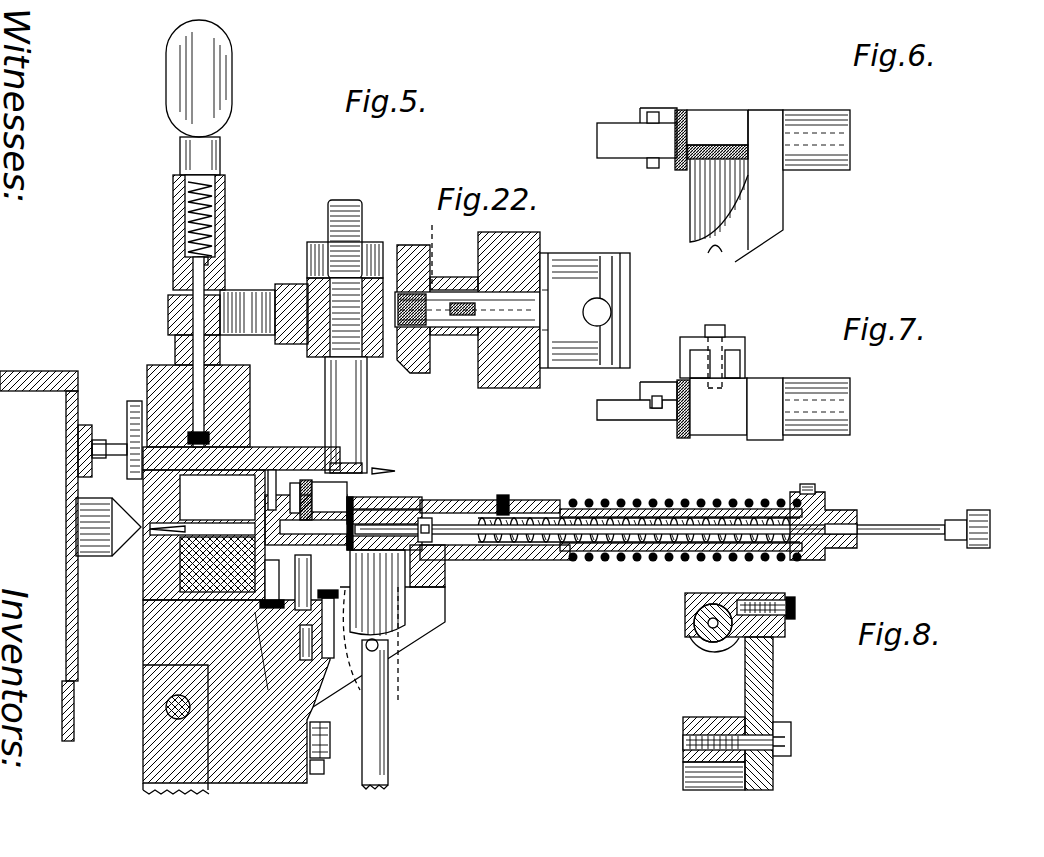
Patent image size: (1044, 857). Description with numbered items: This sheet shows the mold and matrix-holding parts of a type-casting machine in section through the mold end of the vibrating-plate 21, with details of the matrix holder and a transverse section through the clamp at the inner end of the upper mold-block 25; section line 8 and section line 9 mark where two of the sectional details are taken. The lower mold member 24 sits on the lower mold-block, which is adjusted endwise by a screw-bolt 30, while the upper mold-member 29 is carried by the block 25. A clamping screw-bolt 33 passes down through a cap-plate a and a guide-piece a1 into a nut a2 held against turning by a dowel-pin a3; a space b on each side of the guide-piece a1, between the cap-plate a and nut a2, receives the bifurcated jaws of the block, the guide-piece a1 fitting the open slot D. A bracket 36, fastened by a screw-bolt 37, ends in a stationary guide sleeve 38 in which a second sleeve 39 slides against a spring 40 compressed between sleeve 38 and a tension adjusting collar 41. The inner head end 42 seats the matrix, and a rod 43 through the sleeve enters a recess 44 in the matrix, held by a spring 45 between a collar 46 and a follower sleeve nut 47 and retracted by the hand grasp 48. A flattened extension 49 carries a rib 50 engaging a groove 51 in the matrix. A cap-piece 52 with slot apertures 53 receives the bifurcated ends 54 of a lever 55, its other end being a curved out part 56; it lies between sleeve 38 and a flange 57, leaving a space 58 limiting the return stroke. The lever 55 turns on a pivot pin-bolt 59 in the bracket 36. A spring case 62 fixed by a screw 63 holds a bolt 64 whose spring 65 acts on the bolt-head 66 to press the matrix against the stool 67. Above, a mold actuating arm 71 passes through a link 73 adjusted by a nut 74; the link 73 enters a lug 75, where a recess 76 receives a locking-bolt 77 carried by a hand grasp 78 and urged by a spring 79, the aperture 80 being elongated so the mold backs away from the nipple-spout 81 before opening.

In FIG. 5, the section line 8 is at (412, 474).
In FIG. 6, the section line 8 is at (713, 150).
In FIG. 5, the section line 9 is at (127, 668).
In FIG. 5, the vibrating-plate 21 is at (145, 762).
In FIG. 5, the lower mold member 24 is at (217, 564).
In FIG. 5, the upper mold-block 25 is at (252, 385).
In FIG. 5, the upper mold-member 29 is at (204, 535).
In FIG. 5, the screw-bolt 30 is at (178, 722).
In FIG. 5, the clamping screw-bolt 33 is at (236, 691).
In FIG. 22, the clamping screw-bolt 33 is at (627, 310).
In FIG. 5, the bracket 36 is at (435, 600).
In FIG. 6, the bracket 36 is at (770, 210).
In FIG. 8, the bracket 36 is at (773, 680).
In FIG. 5, the screw-bolt 37 is at (330, 727).
In FIG. 5, the stationary guide sleeve 38 is at (545, 500).
In FIG. 6, the stationary guide sleeve 38 is at (812, 120).
In FIG. 7, the stationary guide sleeve 38 is at (825, 390).
In FIG. 5, the second sleeve 39 is at (625, 555).
In FIG. 6, the second sleeve 39 is at (712, 150).
In FIG. 5, the spring 40 is at (680, 505).
In FIG. 5, the tension adjusting collar 41 is at (812, 505).
In FIG. 5, the inner head end 42 is at (377, 593).
In FIG. 8, the inner head end 42 is at (695, 630).
In FIG. 5, the rod 43 is at (428, 516).
In FIG. 8, the rod 43 is at (712, 630).
In FIG. 5, the recess 44 is at (321, 582).
In FIG. 5, the spring 45 is at (735, 515).
In FIG. 5, the collar 46 is at (435, 555).
In FIG. 5, the follower sleeve nut 47 is at (845, 552).
In FIG. 5, the hand grasp 48 is at (990, 527).
In FIG. 5, the flattened extension 49 is at (304, 497).
In FIG. 6, the flattened extension 49 is at (645, 110).
In FIG. 7, the flattened extension 49 is at (645, 390).
In FIG. 5, the rib 50 is at (291, 583).
In FIG. 6, the rib 50 is at (655, 112).
In FIG. 7, the rib 50 is at (658, 396).
In FIG. 7, the groove 51 is at (650, 410).
In FIG. 5, the cap-piece 52 is at (530, 536).
In FIG. 6, the cap-piece 52 is at (720, 130).
In FIG. 7, the cap-piece 52 is at (718, 406).
In FIG. 7, the slot apertures 53 is at (700, 368).
In FIG. 7, the bifurcated ends 54 is at (730, 360).
In FIG. 5, the lever 55 is at (385, 693).
In FIG. 6, the lever 55 is at (700, 185).
In FIG. 7, the lever 55 is at (750, 358).
In FIG. 8, the lever 55 is at (725, 715).
In FIG. 8, the curved out part 56 is at (690, 607).
In FIG. 5, the flange 57 is at (345, 510).
In FIG. 6, the flange 57 is at (680, 120).
In FIG. 7, the flange 57 is at (682, 425).
In FIG. 8, the flange 57 is at (718, 648).
In FIG. 5, the space 58 is at (385, 470).
In FIG. 5, the pivot pin-bolt 59 is at (378, 648).
In FIG. 6, the pivot pin-bolt 59 is at (705, 250).
In FIG. 8, the pivot pin-bolt 59 is at (790, 745).
In FIG. 5, the spring case 62 is at (285, 647).
In FIG. 5, the screw 63 is at (338, 600).
In FIG. 5, the bolt 64 is at (202, 537).
In FIG. 5, the spring 65 is at (254, 644).
In FIG. 5, the bolt-head 66 is at (306, 520).
In FIG. 5, the stool 67 is at (272, 500).
In FIG. 5, the mold actuating arm 71 is at (367, 400).
In FIG. 5, the link 73 is at (258, 300).
In FIG. 5, the nut 74 is at (372, 255).
In FIG. 5, the lug 75 is at (173, 245).
In FIG. 5, the recess 76 is at (168, 318).
In FIG. 5, the locking-bolt 77 is at (195, 295).
In FIG. 5, the hand grasp 78 is at (232, 103).
In FIG. 5, the spring 79 is at (185, 215).
In FIG. 5, the aperture 80 is at (228, 290).
In FIG. 5, the nipple-spout 81 is at (125, 550).
In FIG. 5, the open slot D is at (292, 500).
In FIG. 6, the open slot D is at (605, 150).
In FIG. 7, the open slot D is at (610, 412).
In FIG. 22, the cap-plate a is at (570, 365).
In FIG. 22, the guide-piece a1 is at (470, 372).
In FIG. 22, the nut a2 is at (430, 372).
In FIG. 22, the dowel-pin a3 is at (434, 253).
In FIG. 22, the space b is at (437, 309).